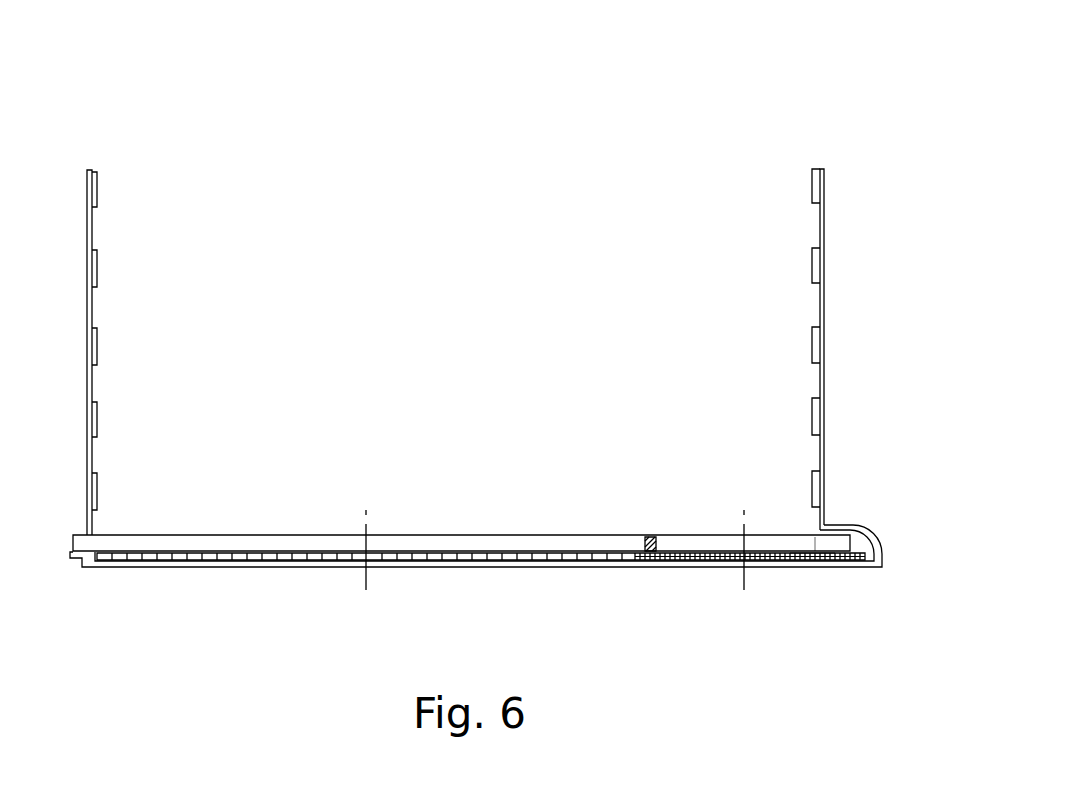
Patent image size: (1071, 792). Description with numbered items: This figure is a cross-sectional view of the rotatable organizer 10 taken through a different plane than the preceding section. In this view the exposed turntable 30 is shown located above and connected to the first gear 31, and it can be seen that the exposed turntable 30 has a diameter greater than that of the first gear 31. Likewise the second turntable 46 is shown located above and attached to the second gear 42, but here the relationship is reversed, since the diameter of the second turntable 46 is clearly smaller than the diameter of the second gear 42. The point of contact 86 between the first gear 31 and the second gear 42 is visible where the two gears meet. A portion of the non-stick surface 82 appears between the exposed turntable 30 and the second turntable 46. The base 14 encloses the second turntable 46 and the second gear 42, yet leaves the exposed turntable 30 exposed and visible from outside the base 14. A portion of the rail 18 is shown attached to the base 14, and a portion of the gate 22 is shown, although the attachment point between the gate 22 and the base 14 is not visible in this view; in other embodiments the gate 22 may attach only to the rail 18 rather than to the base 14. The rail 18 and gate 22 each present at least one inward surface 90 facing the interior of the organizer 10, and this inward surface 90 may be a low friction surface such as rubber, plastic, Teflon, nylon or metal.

The rotatable organizer 10 is at (708, 88).
The base 14 is at (77, 560).
The rail 18 is at (825, 172).
The gate 22 is at (87, 185).
The exposed turntable 30 is at (213, 545).
The first gear 31 is at (132, 555).
The second gear 42 is at (813, 558).
The second turntable 46 is at (827, 543).
The non-stick surface 82 is at (648, 538).
The point of contact 86 is at (635, 562).
The inward surface 90 is at (97, 198).